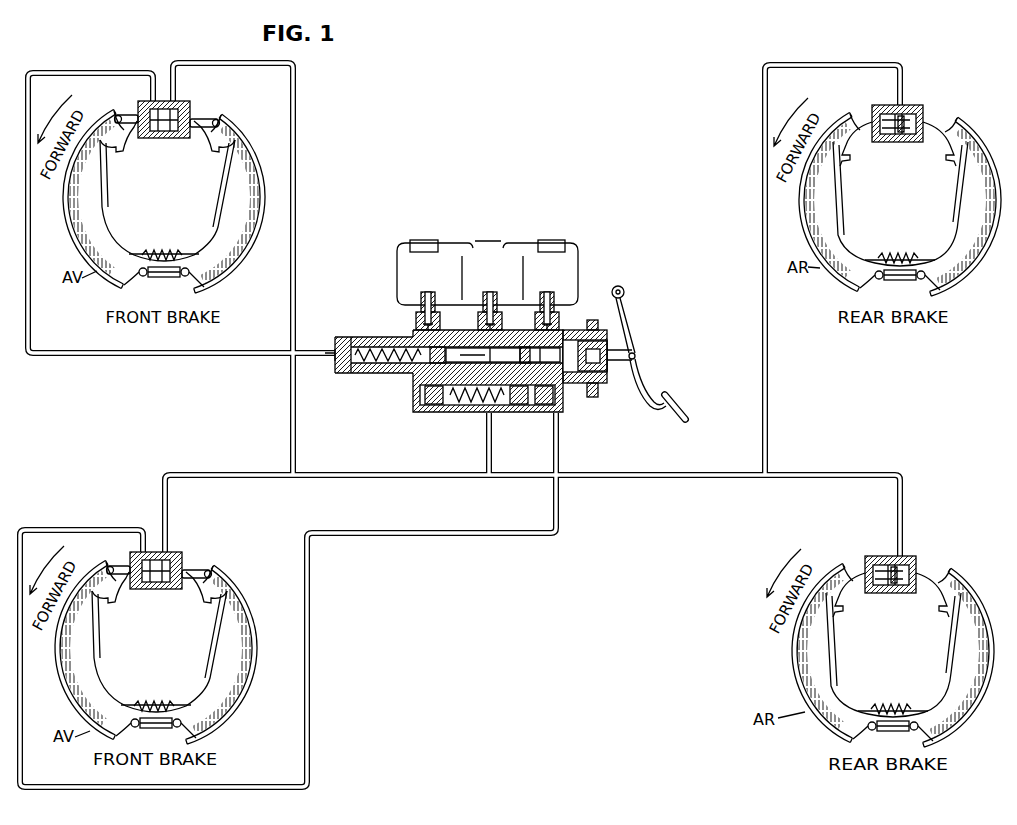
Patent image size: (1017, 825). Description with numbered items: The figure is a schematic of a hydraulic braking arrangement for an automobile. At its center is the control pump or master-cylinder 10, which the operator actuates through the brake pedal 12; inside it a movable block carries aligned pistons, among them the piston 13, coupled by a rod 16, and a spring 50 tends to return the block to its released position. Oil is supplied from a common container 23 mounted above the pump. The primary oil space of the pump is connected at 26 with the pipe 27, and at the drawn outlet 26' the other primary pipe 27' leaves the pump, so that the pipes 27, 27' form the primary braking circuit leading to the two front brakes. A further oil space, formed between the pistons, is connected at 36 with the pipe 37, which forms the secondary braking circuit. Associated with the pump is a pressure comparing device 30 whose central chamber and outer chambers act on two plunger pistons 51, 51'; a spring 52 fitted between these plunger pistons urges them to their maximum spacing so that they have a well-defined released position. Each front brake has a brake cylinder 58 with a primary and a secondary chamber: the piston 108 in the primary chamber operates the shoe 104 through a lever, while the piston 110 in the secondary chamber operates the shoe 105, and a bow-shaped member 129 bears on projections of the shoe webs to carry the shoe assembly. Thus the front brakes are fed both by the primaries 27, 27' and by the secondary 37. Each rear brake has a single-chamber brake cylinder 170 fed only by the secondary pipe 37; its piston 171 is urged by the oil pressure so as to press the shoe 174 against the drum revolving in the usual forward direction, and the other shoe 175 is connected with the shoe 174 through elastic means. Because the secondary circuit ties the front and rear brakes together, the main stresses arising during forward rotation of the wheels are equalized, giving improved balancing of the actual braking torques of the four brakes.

The master-cylinder 10 is at (372, 337).
The brake pedal 12 is at (638, 370).
The piston 13 is at (606, 338).
The rod 16 is at (508, 351).
The container 23 is at (578, 249).
The connection of the space with pipe 27 26 is at (594, 378).
The front brake outlet 26' is at (319, 367).
The pipe 27 is at (288, 600).
The pipe 27' is at (181, 213).
The pressure comparing device 30 is at (420, 410).
The connection of the space with pipe 37 36 is at (471, 399).
The pipe 37 is at (296, 269).
The spring 50 is at (385, 366).
The plunger piston 51 is at (540, 413).
The plunger piston 51' is at (427, 412).
The spring 52 is at (502, 409).
The brake cylinder 58 is at (163, 100).
The shoe 104 is at (71, 229).
The shoe 105 is at (259, 150).
The piston 108 is at (143, 113).
The piston 110 is at (192, 116).
The bow-shaped member 129 is at (112, 226).
The brake cylinder 170 is at (908, 109).
The piston 171 is at (926, 125).
The shoe 174 is at (950, 164).
The shoe 175 is at (843, 164).